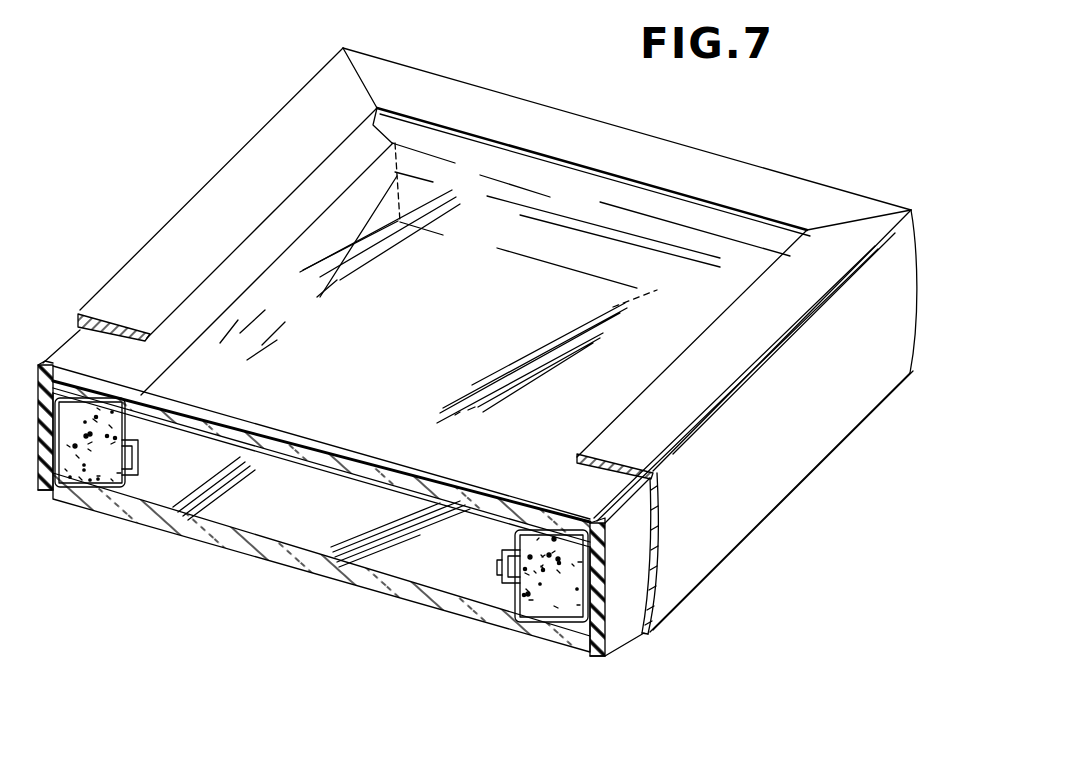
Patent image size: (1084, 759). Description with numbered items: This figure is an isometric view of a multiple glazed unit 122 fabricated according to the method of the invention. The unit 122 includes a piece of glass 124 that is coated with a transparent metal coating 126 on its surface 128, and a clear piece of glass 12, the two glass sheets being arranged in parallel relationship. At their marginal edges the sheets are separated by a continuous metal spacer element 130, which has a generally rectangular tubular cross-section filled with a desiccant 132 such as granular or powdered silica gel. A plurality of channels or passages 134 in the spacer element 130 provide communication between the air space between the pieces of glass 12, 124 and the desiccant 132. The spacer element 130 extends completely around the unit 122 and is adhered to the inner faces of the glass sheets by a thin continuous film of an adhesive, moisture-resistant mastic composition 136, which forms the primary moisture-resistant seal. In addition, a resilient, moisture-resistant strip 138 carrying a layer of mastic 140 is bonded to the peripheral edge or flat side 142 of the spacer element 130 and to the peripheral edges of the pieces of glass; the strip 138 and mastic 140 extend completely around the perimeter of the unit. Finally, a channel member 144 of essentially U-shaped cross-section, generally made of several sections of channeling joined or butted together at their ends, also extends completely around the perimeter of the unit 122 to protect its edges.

The clear piece of glass 12 is at (300, 567).
The multiple glazed unit 122 is at (732, 140).
The piece of glass 124 is at (277, 440).
The transparent metal coating 126 is at (340, 478).
The surface 128 is at (317, 467).
The spacer element 130 is at (140, 457).
The desiccant 132 is at (128, 412).
The channels or passages 134 is at (505, 568).
The mastic composition 136 is at (88, 405).
The moisture-resistant strip 138 is at (103, 320).
The layer of mastic 140 is at (45, 492).
The peripheral edge or flat side 142 is at (38, 400).
The channel member 144 is at (165, 226).